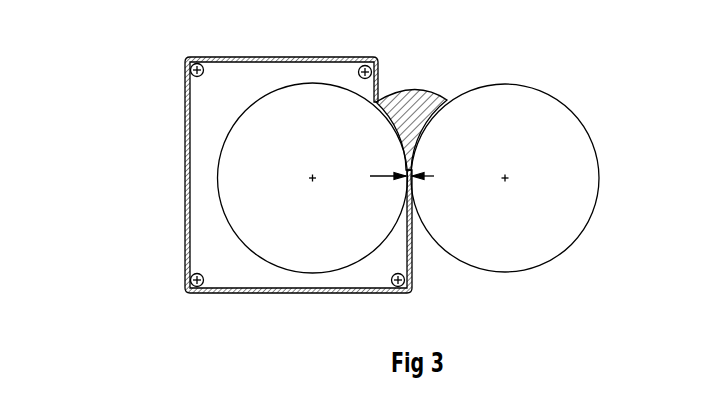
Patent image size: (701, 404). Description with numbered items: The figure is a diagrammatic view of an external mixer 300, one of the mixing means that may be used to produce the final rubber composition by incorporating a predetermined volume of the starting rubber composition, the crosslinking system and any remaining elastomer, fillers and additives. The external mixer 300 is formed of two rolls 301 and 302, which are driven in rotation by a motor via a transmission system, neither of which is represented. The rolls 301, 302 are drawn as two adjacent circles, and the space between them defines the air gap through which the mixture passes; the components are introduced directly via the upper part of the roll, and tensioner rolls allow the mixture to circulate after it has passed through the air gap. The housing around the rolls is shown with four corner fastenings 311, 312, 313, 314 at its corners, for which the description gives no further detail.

The external mixer 300 is at (158, 200).
The roll 301 is at (553, 125).
The roll 302 is at (246, 126).
The fastening screw 311 is at (411, 293).
The fastening screw 312 is at (190, 291).
The fastening screw 313 is at (190, 60).
The fastening screw 314 is at (377, 63).